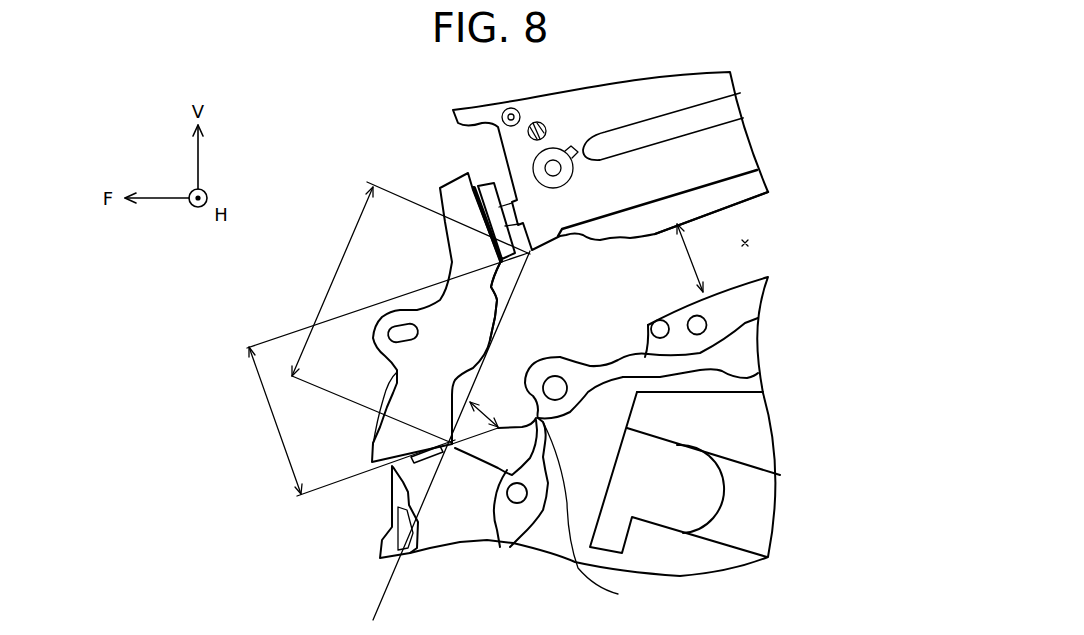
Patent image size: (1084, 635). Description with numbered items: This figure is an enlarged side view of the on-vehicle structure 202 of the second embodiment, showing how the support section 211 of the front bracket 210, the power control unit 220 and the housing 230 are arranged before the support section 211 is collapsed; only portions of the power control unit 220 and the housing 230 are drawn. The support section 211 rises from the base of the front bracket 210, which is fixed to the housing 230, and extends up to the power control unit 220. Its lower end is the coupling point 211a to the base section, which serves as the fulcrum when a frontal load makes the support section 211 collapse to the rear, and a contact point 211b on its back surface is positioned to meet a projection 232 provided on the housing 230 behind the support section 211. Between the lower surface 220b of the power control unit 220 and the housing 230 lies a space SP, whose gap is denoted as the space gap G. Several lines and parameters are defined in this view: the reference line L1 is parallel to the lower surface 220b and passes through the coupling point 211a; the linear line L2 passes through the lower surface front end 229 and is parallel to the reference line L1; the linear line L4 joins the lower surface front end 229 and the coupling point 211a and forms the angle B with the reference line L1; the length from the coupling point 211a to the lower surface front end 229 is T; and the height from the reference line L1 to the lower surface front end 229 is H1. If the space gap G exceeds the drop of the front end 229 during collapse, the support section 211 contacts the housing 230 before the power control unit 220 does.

The on-vehicle structure 202 is at (293, 140).
The front bracket 210 is at (430, 158).
The support section 211 is at (453, 272).
The coupling point 211a is at (467, 440).
The contact point 211b is at (503, 338).
The power control unit 220 is at (725, 84).
The lower surface 220b is at (745, 204).
The lower surface front end 229 is at (537, 243).
The housing 230 is at (760, 440).
The projection 232 is at (557, 356).
The space SP is at (748, 243).
The space gap G is at (695, 258).
The angle B is at (590, 514).
The reference line L1 is at (328, 496).
The linear line L2 is at (262, 345).
The linear line L4 is at (393, 577).
The length T is at (411, 312).
The height H1 is at (275, 420).